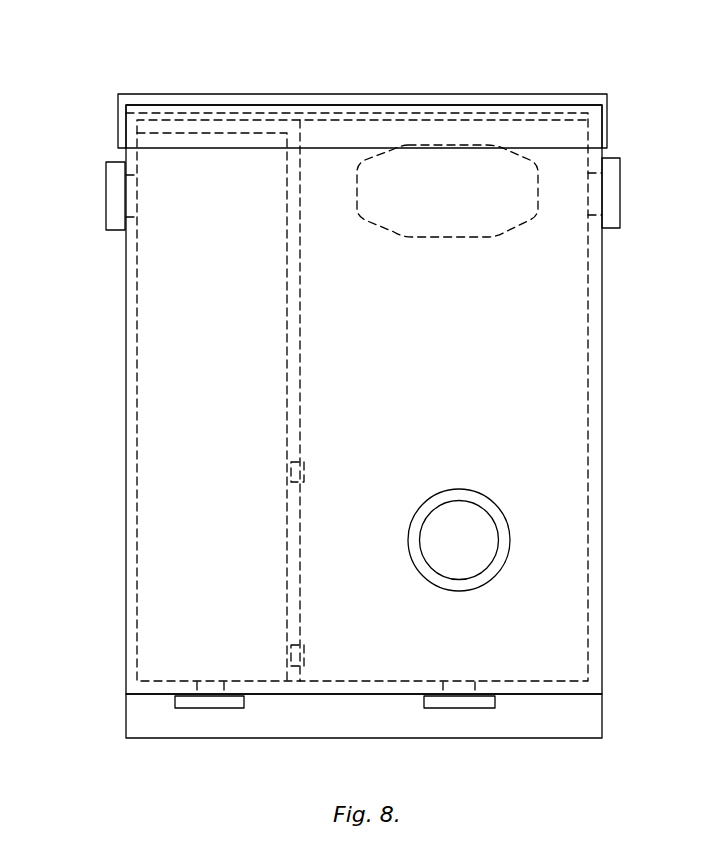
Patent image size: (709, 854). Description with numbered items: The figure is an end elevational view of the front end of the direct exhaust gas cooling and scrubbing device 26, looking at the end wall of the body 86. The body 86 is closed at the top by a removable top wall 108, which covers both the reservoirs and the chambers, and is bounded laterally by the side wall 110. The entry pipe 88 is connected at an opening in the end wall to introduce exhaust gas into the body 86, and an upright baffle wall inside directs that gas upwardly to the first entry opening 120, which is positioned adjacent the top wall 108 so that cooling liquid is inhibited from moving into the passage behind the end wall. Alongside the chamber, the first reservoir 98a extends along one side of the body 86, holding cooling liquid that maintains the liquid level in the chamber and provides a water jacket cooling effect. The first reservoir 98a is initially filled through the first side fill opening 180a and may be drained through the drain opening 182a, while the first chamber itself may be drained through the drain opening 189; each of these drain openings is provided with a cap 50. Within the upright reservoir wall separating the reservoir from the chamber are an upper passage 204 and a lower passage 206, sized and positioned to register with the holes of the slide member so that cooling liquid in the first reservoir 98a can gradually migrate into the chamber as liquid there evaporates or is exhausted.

The direct exhaust gas cooling and scrubbing device 26 is at (170, 77).
The removable top wall 108 is at (292, 94).
The side wall 110 is at (603, 390).
The body 86 is at (606, 517).
The first reservoir 98a is at (263, 450).
The first entry opening 120 is at (517, 152).
The drain opening 189 is at (586, 200).
The first side fill opening 180a is at (133, 197).
The cap 50 is at (106, 205).
The drain opening 182a is at (210, 690).
The upper passage 204 is at (300, 474).
The lower passage 206 is at (290, 655).
The entry pipe 88 is at (465, 500).